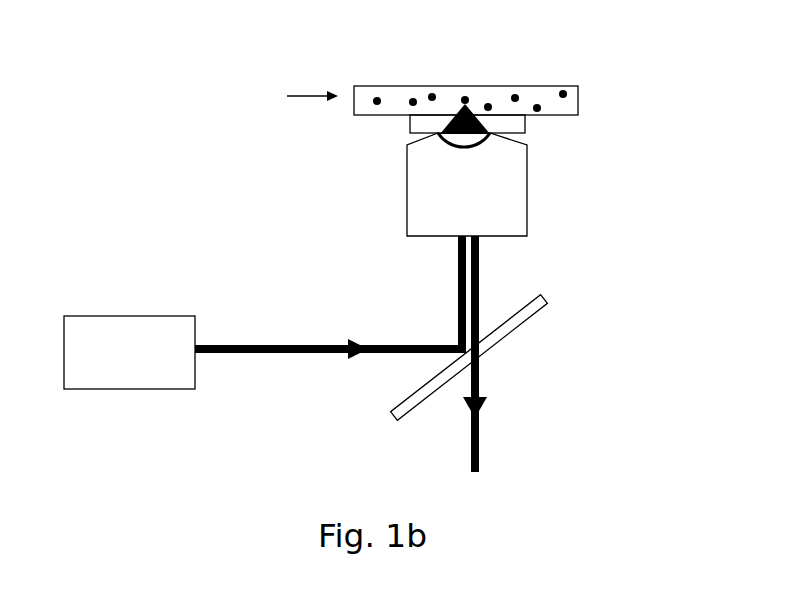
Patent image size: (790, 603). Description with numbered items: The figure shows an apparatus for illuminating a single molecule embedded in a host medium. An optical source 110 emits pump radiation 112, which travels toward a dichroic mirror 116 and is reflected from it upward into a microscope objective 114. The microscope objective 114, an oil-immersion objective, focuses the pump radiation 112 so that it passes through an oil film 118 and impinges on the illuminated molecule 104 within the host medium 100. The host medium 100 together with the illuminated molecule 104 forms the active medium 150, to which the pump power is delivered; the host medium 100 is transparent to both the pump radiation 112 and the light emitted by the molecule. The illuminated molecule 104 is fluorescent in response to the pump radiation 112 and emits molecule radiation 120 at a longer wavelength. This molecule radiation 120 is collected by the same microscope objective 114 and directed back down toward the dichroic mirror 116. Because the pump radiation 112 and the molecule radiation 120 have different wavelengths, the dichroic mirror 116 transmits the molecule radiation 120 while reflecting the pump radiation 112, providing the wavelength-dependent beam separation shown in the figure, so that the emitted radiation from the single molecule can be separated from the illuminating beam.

The host medium 100 is at (570, 110).
The illuminated molecule 104 is at (466, 97).
The optical source 110 is at (118, 318).
The pump radiation 112 is at (263, 353).
The microscope objective 114 is at (527, 200).
The dichroic mirror 116 is at (530, 310).
The oil film 118 is at (415, 133).
The molecule radiation 120 is at (480, 420).
The active medium 150 is at (285, 98).